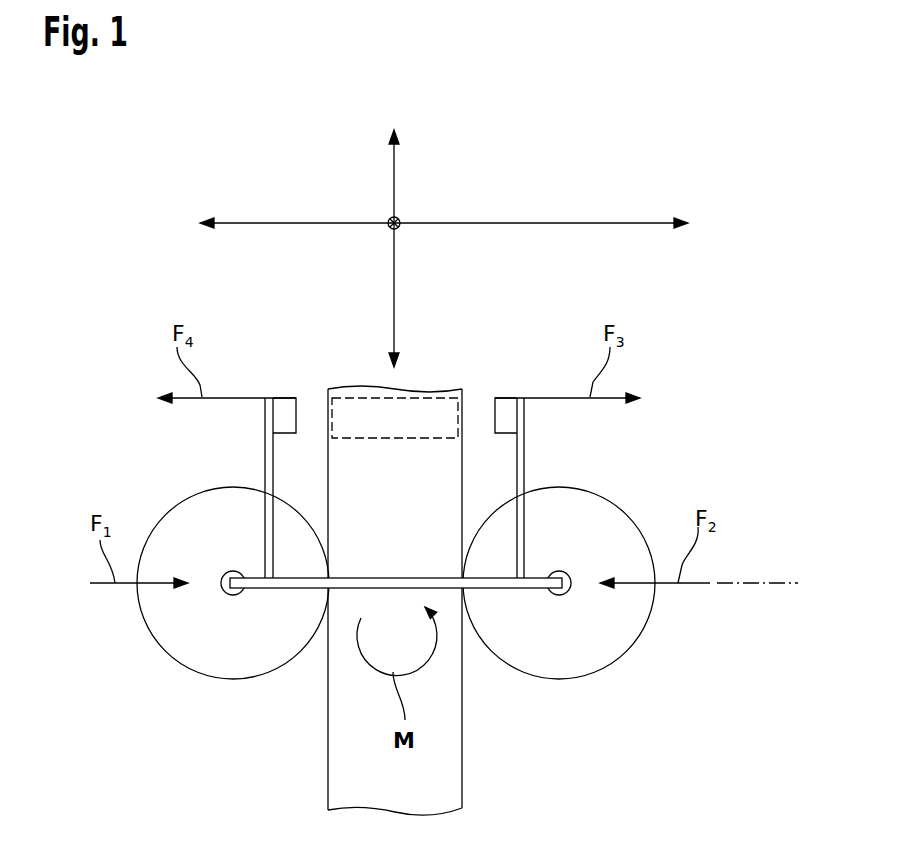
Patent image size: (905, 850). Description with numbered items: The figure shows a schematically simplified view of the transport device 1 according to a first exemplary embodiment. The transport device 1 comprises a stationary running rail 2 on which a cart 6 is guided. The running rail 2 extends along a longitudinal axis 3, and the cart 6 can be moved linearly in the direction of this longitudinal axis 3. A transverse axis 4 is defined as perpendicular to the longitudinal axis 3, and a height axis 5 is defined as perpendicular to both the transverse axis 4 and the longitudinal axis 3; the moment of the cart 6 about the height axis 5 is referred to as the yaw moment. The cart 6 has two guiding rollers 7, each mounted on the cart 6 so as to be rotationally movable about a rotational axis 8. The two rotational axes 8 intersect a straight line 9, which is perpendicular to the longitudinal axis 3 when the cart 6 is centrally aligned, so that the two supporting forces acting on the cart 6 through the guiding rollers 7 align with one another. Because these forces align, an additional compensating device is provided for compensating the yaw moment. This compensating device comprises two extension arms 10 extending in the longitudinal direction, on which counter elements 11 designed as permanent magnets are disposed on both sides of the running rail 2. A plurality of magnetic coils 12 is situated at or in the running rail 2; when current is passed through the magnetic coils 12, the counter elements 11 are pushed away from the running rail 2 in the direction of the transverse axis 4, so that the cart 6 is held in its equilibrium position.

The transport device 1 is at (110, 742).
The running rail 2 is at (445, 754).
The longitudinal axis 3 is at (397, 297).
The transverse axis 4 is at (583, 223).
The height axis 5 is at (400, 218).
The cart 6 is at (298, 588).
The guiding roller 7 is at (170, 636).
The rotational axis 8 is at (231, 596).
The straight line 9 is at (755, 590).
The extension arm 10 is at (267, 455).
The counter element 11 is at (286, 407).
The magnetic coil 12 is at (357, 400).